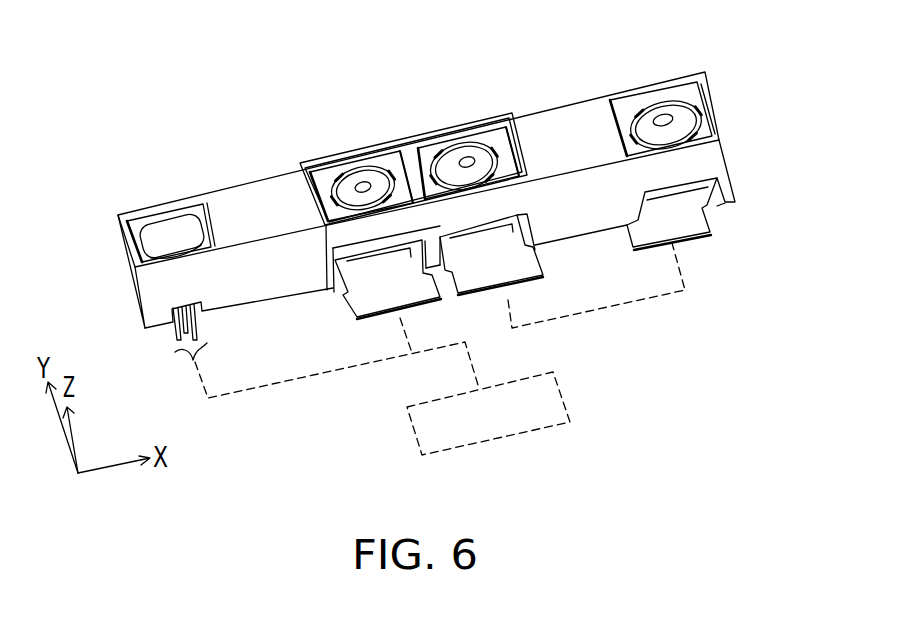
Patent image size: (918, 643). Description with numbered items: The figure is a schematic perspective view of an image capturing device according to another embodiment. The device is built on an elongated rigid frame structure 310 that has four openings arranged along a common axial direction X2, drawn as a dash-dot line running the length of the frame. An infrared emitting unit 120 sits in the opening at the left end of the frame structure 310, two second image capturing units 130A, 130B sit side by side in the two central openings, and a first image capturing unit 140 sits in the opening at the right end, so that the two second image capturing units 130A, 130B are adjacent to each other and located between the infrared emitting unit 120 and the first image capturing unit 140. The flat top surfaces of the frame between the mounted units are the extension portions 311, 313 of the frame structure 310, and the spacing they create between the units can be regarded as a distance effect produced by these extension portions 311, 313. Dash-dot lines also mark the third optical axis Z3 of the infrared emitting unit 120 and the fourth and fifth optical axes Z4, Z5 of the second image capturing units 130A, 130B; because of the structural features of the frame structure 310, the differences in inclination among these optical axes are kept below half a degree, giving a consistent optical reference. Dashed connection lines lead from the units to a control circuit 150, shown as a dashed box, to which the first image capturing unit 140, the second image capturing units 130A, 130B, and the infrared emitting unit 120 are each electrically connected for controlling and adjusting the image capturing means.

The frame structure 310 is at (145, 340).
The extension portion 311 is at (252, 197).
The extension portion 313 is at (557, 125).
The infrared emitting unit 120 is at (188, 225).
The second image capturing unit 130A is at (382, 180).
The second image capturing unit 130B is at (482, 150).
The first image capturing unit 140 is at (663, 120).
The control circuit 150 is at (562, 397).
The third optical axis Z3 is at (171, 232).
The fourth optical axis Z4 is at (365, 190).
The fifth optical axis Z5 is at (467, 160).
The axial direction X2 is at (53, 290).